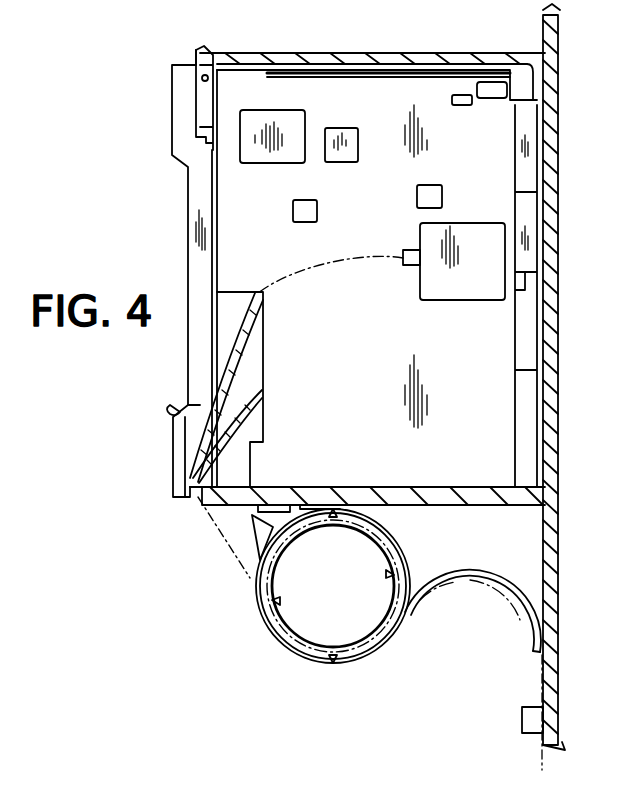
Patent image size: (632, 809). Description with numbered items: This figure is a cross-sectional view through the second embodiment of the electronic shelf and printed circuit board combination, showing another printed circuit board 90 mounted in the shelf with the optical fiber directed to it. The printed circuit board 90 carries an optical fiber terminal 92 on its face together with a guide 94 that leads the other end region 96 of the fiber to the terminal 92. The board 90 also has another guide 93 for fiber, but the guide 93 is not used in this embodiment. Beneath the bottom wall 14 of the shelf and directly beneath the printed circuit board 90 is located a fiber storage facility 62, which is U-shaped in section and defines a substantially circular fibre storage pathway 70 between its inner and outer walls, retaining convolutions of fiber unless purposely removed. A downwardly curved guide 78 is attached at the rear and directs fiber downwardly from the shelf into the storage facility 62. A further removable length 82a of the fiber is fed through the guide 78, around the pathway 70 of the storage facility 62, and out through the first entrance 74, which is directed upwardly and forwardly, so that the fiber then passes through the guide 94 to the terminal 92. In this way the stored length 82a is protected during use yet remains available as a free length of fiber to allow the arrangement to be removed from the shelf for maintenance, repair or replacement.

The bottom wall 14 is at (445, 507).
The fiber storage facility 62 is at (313, 617).
The fibre storage pathway 70 is at (270, 625).
The first entrance 74 is at (253, 555).
The downwardly curved guide 78 is at (450, 592).
The removable length of the fiber 82a is at (293, 660).
The printed circuit board 90 is at (230, 103).
The optical fiber terminal 92 is at (403, 265).
The guide 93 is at (205, 447).
The guide 94 is at (235, 358).
The end region of the fiber 96 is at (358, 252).